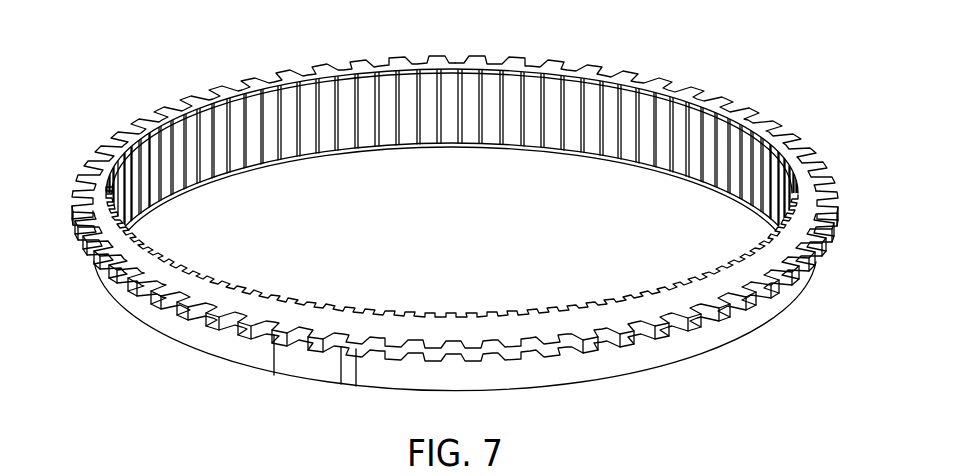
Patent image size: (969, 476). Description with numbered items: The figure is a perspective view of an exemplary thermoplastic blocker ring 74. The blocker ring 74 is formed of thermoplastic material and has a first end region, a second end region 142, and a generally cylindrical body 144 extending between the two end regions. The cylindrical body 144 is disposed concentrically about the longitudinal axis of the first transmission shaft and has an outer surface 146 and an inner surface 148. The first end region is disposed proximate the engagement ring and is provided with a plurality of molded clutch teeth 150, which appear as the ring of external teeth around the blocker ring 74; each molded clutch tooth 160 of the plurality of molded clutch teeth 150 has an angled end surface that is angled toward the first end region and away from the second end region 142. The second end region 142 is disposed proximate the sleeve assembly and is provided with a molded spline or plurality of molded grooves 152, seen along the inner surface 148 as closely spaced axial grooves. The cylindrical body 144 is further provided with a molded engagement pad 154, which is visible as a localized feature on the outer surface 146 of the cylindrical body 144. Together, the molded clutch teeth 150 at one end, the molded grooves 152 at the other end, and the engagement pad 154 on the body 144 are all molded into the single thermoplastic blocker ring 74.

The blocker ring 74 is at (438, 232).
The second end region 142 is at (756, 338).
The cylindrical body 144 is at (656, 355).
The outer surface 146 is at (232, 328).
The inner surface 148 is at (513, 77).
The plurality of molded clutch teeth 150 is at (69, 245).
The molded spline or plurality of molded grooves 152 is at (426, 76).
The molded engagement pad 154 is at (304, 390).
The molded clutch tooth 160 is at (810, 140).